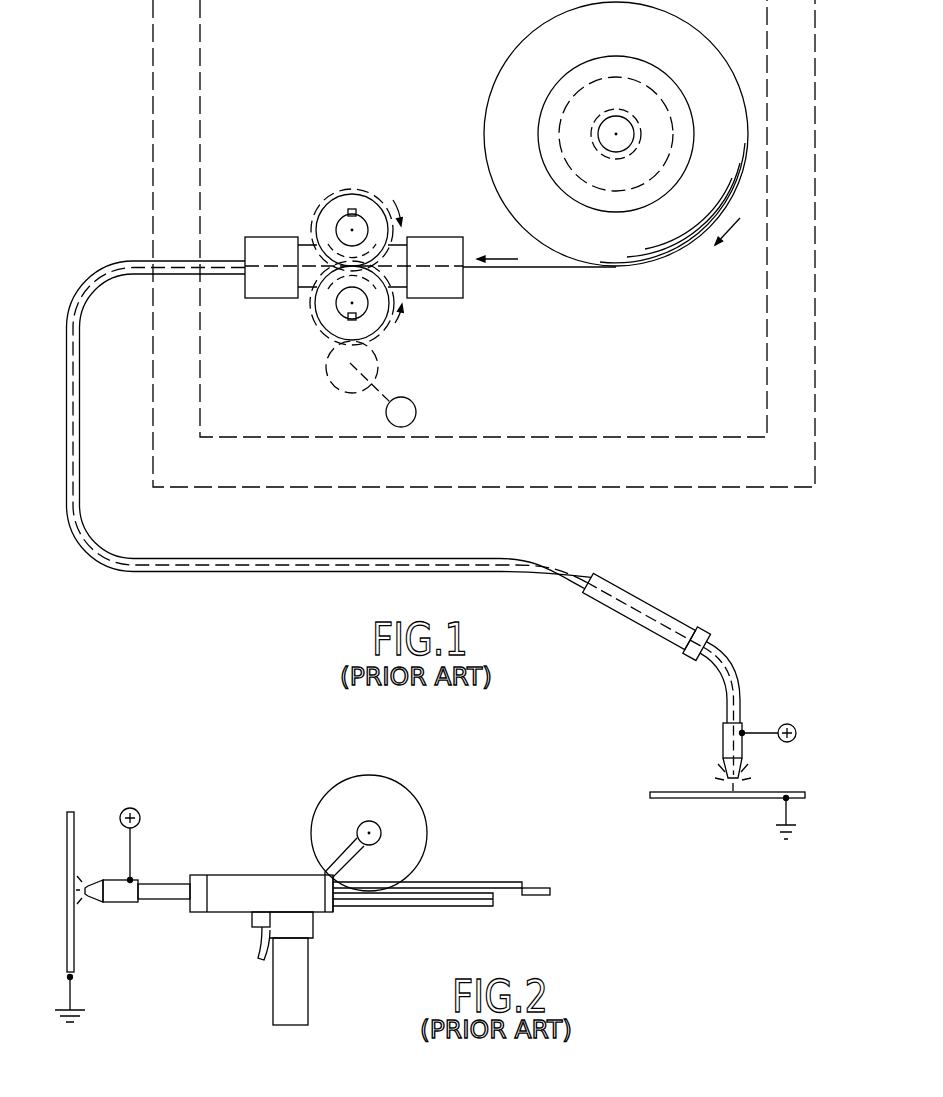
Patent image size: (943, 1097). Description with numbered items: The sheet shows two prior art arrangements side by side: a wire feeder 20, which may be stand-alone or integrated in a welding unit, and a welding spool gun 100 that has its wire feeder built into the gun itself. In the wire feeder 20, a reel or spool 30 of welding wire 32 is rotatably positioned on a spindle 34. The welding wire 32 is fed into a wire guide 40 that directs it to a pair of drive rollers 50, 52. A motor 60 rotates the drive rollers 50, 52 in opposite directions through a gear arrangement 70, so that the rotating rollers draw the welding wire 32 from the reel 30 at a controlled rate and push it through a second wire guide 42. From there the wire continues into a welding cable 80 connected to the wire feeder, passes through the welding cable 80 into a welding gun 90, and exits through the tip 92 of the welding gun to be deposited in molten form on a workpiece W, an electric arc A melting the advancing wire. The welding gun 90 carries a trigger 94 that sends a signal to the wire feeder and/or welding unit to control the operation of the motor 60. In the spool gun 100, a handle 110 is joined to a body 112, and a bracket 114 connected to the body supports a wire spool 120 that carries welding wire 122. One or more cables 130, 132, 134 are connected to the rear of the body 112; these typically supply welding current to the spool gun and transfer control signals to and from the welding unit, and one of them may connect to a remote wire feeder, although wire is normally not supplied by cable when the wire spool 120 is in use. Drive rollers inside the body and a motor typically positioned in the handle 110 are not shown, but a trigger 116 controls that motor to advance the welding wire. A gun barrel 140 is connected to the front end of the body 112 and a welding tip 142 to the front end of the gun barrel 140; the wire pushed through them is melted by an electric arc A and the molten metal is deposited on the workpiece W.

In FIG. 1, the reel or spool 30 is at (488, 37).
In FIG. 1, the spindle 34 is at (598, 125).
In FIG. 1, the welding wire 32 is at (548, 267).
In FIG. 1, the second wire guide 42 is at (265, 237).
In FIG. 1, the wire guide 40 is at (440, 237).
In FIG. 1, the drive roller 50 is at (341, 196).
In FIG. 1, the drive roller 52 is at (378, 328).
In FIG. 1, the motor 60 is at (417, 405).
In FIG. 1, the gear arrangement 70 is at (327, 371).
In FIG. 1, the welding cable 80 is at (455, 558).
In FIG. 1, the welding gun 90 is at (656, 598).
In FIG. 1, the trigger 94 is at (660, 640).
In FIG. 1, the tip 92 is at (745, 767).
In FIG. 1, the workpiece W is at (683, 792).
In FIG. 2, the workpiece W is at (75, 825).
In FIG. 1, the electric arc A is at (714, 776).
In FIG. 2, the electric arc A is at (85, 875).
In FIG. 2, the welding spool gun 100 is at (240, 777).
In FIG. 2, the wire feeder 20 is at (355, 760).
In FIG. 2, the bracket 114 is at (352, 840).
In FIG. 2, the wire spool 120 is at (422, 803).
In FIG. 2, the welding wire 122 is at (345, 900).
In FIG. 2, the cable 130 is at (538, 882).
In FIG. 2, the cable 132 is at (497, 882).
In FIG. 2, the cable 134 is at (455, 897).
In FIG. 2, the body 112 is at (238, 875).
In FIG. 2, the gun barrel 140 is at (172, 883).
In FIG. 2, the welding tip 142 is at (110, 905).
In FIG. 2, the trigger 116 is at (255, 952).
In FIG. 2, the handle 110 is at (280, 990).